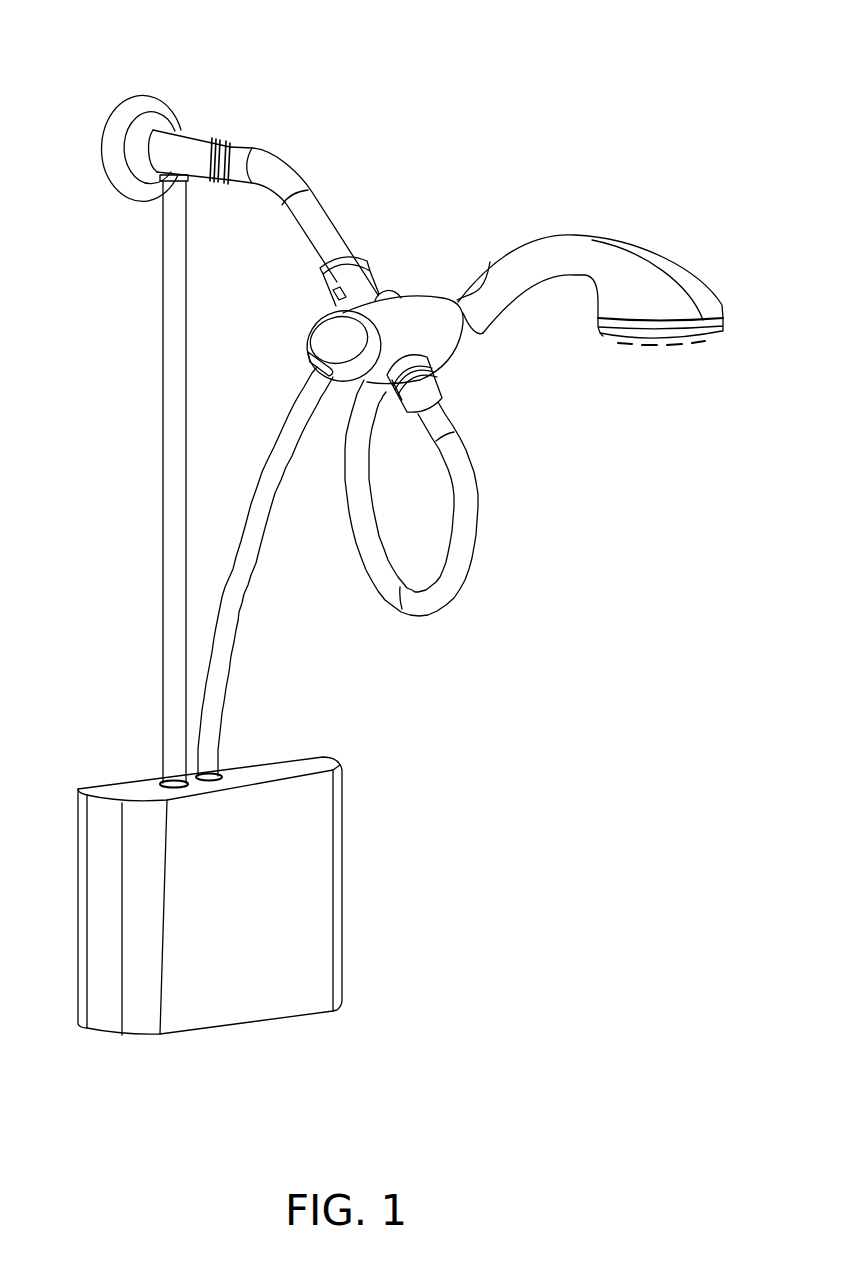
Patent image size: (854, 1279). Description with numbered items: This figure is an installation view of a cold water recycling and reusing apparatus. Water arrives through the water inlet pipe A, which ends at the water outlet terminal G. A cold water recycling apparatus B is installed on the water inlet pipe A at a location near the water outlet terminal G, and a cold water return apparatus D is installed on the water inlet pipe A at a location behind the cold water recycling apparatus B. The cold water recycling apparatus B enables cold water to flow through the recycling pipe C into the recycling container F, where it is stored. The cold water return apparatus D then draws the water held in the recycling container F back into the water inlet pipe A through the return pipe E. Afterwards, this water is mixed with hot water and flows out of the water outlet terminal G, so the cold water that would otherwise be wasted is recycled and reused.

The water inlet pipe A is at (318, 232).
The cold water recycling apparatus B is at (437, 338).
The recycling pipe C is at (245, 553).
The cold water return apparatus D is at (183, 148).
The return pipe E is at (173, 416).
The recycling container F is at (305, 855).
The water outlet terminal G is at (651, 285).